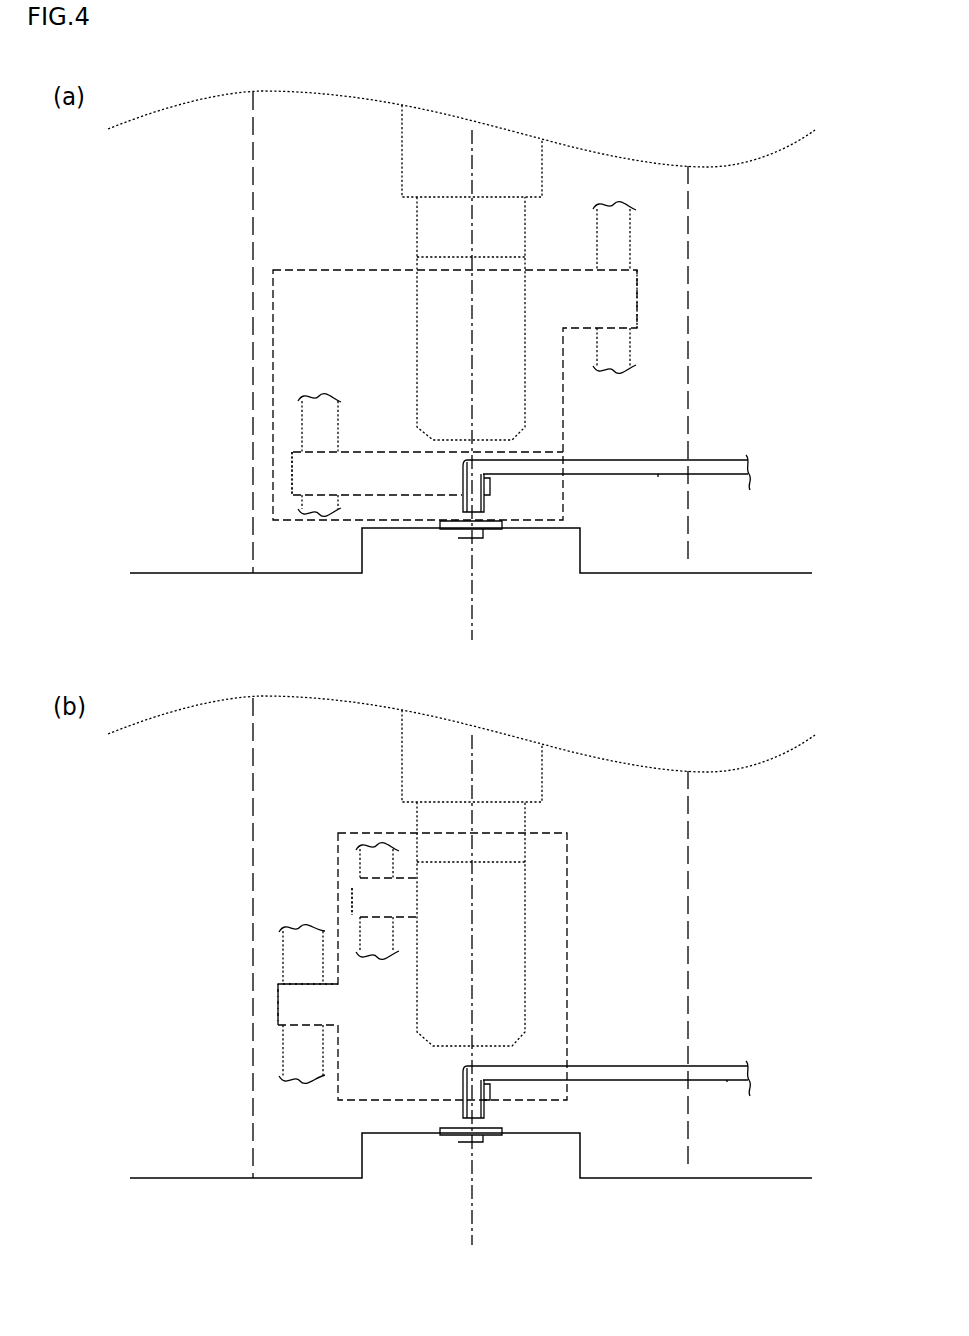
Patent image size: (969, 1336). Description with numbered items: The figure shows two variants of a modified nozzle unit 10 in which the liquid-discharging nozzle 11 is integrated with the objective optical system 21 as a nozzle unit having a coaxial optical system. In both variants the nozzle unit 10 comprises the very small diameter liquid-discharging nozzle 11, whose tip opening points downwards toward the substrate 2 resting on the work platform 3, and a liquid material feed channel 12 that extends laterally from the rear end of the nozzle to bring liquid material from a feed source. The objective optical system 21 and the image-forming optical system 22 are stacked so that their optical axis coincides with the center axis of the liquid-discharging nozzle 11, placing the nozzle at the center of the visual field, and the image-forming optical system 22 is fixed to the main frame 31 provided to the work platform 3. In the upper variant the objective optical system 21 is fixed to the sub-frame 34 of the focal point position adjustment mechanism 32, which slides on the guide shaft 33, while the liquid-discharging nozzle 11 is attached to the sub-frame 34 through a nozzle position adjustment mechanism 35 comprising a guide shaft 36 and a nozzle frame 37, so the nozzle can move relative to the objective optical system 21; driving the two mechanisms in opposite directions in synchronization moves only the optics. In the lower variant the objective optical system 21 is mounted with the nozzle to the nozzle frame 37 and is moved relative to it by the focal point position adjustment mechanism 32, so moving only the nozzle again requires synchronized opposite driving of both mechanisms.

The substrate 2 is at (502, 528).
The work platform 3 is at (582, 549).
The nozzle unit 10 is at (622, 444).
The liquid-discharging nozzle 11 is at (473, 460).
The liquid material feed channel 12 is at (658, 477).
The objective optical system 21 is at (418, 319).
The image-forming optical system 22 is at (402, 161).
The main frame 31 is at (690, 402).
The focal point position adjustment mechanism 32 is at (660, 327).
The guide shaft 33 is at (635, 241).
The sub-frame 34 is at (648, 306).
The nozzle position adjustment mechanism 35 is at (280, 447).
The guide shaft 36 is at (292, 425).
The nozzle frame 37 is at (292, 482).